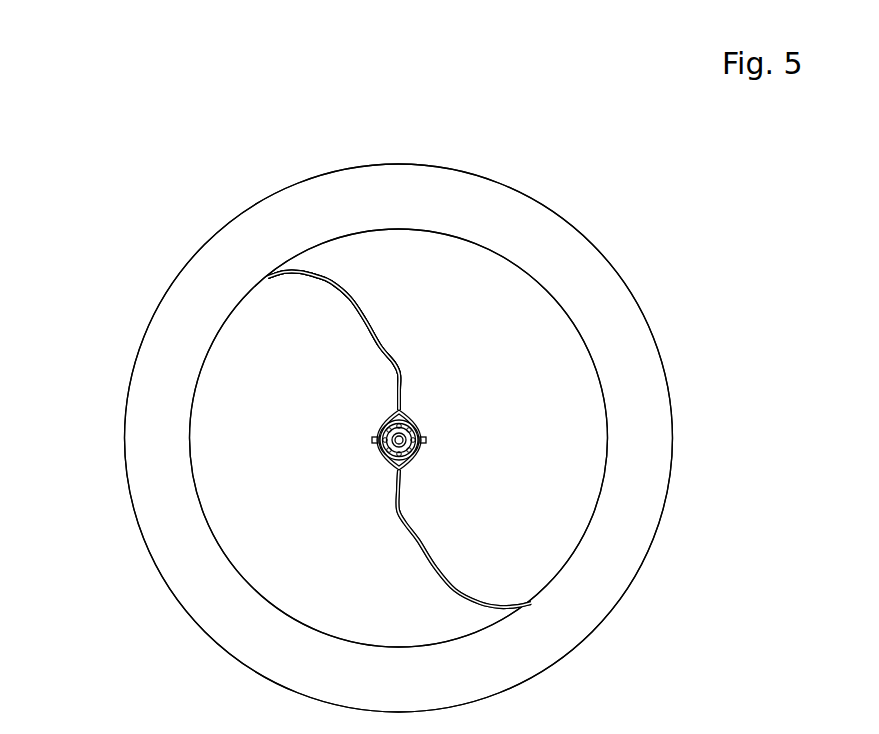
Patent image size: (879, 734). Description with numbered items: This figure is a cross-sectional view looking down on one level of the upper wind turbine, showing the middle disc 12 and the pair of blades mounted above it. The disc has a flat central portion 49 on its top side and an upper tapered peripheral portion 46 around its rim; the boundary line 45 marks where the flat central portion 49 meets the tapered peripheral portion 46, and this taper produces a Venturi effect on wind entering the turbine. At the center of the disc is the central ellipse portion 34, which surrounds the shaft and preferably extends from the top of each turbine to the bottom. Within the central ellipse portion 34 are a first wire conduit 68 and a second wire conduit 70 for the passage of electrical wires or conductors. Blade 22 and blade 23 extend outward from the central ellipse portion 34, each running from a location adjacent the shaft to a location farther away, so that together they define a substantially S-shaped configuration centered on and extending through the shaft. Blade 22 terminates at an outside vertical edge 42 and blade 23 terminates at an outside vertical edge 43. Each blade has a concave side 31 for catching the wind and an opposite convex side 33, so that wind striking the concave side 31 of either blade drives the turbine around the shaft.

The middle disc 12 is at (488, 488).
The blade 22 is at (337, 286).
The blade 23 is at (413, 537).
The concave side 31 is at (367, 335).
The convex side 33 is at (372, 318).
The central ellipse portion 34 is at (416, 424).
The outside vertical edge 42 is at (268, 277).
The outside vertical edge 43 is at (531, 603).
The boundary line 45 is at (557, 298).
The upper tapered peripheral portion 46 is at (628, 492).
The flat central portion 49 is at (546, 419).
The first wire conduit 68 is at (405, 413).
The second wire conduit 70 is at (380, 463).